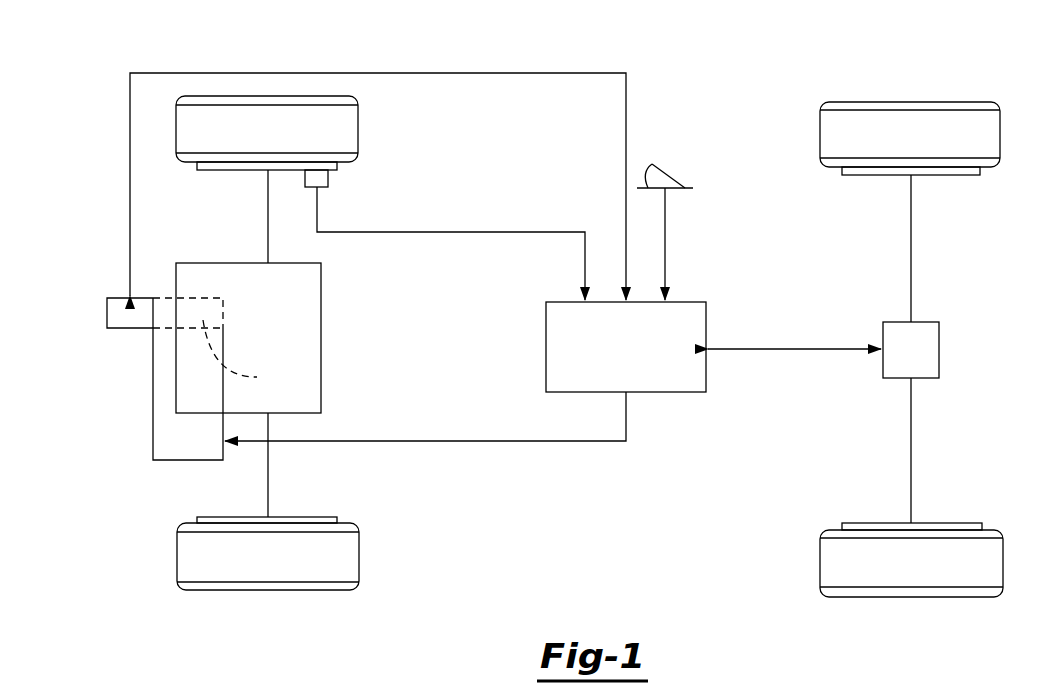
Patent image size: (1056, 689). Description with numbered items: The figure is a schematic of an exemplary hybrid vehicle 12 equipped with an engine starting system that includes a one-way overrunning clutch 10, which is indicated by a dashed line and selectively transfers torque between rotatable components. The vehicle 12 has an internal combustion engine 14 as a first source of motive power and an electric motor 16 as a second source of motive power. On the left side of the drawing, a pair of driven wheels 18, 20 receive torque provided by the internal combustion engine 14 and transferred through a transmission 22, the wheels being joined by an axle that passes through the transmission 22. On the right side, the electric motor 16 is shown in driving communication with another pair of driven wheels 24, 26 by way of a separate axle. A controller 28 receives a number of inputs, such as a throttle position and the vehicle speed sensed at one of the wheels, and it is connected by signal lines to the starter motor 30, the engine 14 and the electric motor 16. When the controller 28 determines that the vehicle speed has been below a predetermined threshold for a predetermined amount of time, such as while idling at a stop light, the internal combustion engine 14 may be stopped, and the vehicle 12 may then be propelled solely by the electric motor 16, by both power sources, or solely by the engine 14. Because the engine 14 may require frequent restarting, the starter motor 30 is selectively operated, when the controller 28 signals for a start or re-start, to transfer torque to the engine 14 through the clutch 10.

The one-way overrunning clutch 10 is at (242, 355).
The vehicle 12 is at (852, 58).
The internal combustion engine 14 is at (165, 399).
The electric motor 16 is at (939, 353).
The driven wheel 18 is at (347, 557).
The driven wheel 20 is at (347, 122).
The transmission 22 is at (295, 275).
The driven wheel 24 is at (828, 137).
The driven wheel 26 is at (833, 565).
The controller 28 is at (707, 313).
The starter motor 30 is at (115, 305).